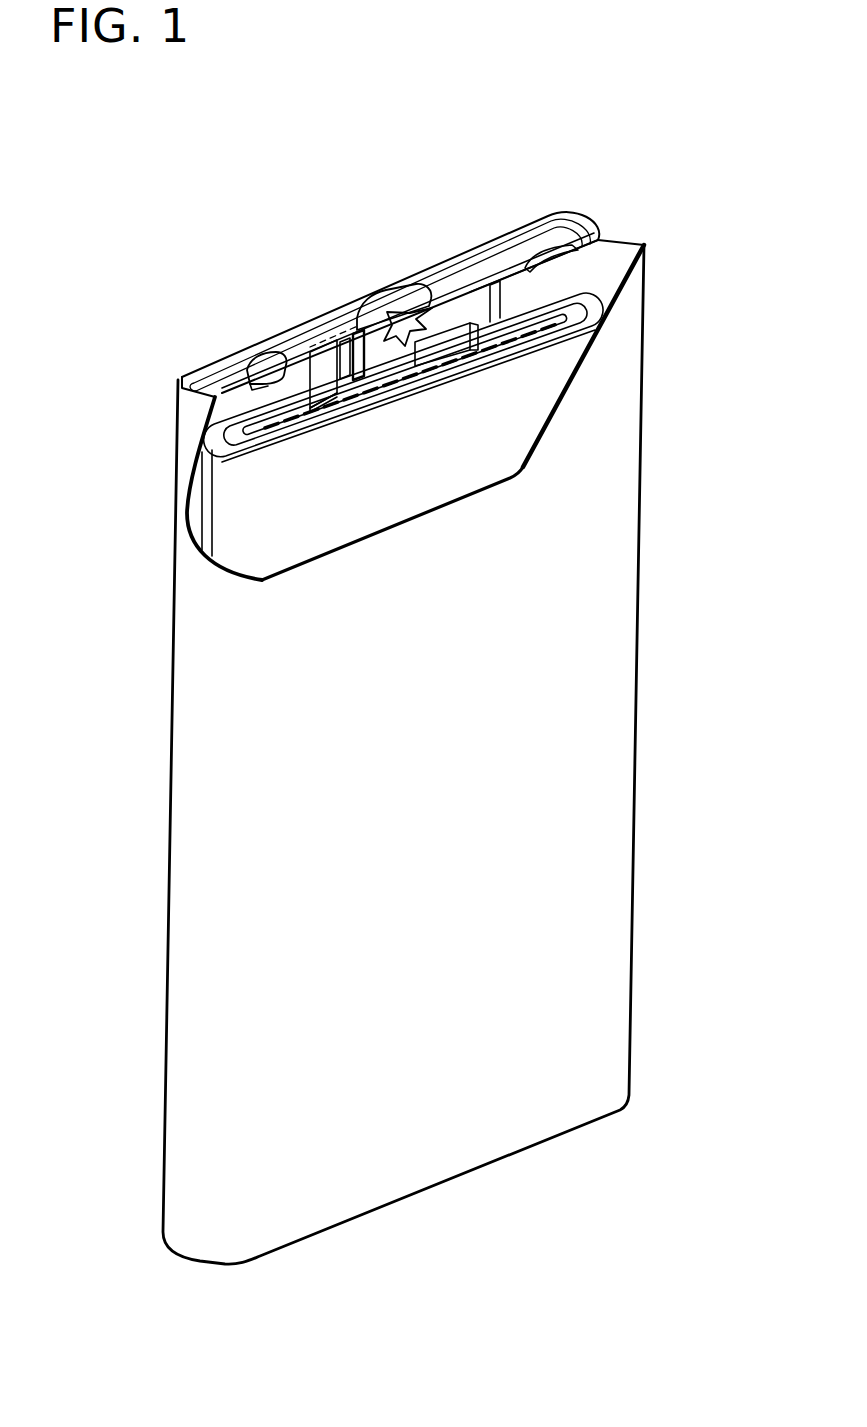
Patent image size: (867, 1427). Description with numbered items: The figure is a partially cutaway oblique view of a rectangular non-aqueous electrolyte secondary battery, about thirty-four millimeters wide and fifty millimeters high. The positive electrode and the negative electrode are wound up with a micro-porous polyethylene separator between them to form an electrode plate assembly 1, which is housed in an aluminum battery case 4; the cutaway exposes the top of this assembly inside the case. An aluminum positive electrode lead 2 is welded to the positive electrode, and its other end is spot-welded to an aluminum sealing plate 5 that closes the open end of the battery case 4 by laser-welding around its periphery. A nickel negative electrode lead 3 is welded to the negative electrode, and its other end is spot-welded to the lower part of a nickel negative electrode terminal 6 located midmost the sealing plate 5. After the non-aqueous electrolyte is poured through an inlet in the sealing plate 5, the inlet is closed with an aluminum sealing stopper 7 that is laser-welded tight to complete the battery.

The electrode plate assembly 1 is at (412, 488).
The positive electrode lead 2 is at (212, 404).
The negative electrode lead 3 is at (457, 340).
The battery case 4 is at (598, 934).
The sealing plate 5 is at (476, 282).
The negative electrode terminal 6 is at (410, 300).
The sealing stopper 7 is at (265, 360).